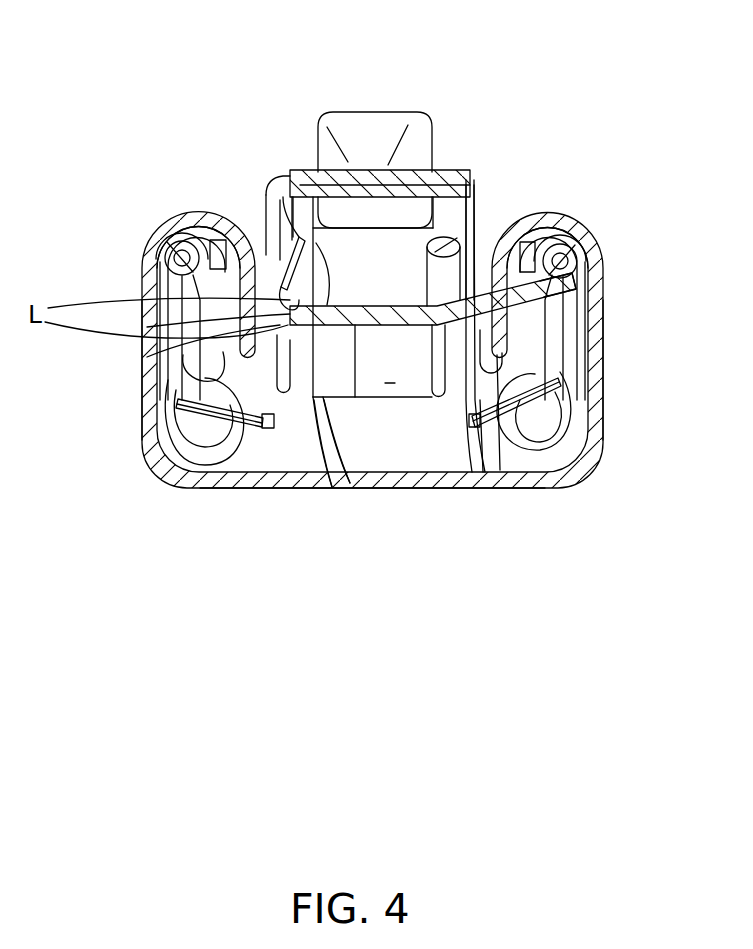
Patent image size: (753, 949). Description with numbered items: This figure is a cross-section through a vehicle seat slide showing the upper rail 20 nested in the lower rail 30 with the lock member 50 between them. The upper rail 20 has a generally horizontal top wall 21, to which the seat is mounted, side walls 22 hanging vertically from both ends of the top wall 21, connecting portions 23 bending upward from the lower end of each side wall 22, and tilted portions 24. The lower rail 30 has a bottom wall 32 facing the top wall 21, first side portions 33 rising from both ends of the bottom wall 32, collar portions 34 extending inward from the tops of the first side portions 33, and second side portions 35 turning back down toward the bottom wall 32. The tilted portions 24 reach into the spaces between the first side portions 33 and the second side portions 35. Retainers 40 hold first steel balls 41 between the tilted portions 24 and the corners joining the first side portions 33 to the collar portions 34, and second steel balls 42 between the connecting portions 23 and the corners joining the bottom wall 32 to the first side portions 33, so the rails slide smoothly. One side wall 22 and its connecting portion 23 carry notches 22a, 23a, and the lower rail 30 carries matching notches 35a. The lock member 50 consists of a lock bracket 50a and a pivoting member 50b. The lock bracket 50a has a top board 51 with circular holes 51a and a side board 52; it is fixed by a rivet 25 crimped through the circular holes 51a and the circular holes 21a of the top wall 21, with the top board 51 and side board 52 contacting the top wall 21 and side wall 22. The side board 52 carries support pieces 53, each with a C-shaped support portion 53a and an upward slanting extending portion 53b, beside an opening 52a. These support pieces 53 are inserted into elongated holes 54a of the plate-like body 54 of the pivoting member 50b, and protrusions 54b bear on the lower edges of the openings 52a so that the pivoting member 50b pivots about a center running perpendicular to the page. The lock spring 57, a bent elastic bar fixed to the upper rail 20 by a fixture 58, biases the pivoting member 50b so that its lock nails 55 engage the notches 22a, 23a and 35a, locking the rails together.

The upper rail 20 is at (305, 82).
The top wall 21 is at (440, 170).
The circular holes 21a is at (323, 128).
The side walls 22 is at (217, 222).
The notches 22a is at (483, 472).
The connecting portions 23 is at (185, 400).
The notches 23a is at (575, 285).
The tilted portions 24 is at (175, 215).
The rivet 25 is at (373, 115).
The lower rail 30 is at (582, 502).
The bottom wall 32 is at (222, 487).
The first side portions 33 is at (150, 418).
The collar portions 34 is at (196, 226).
The second side portions 35 is at (165, 250).
The notches 35a is at (500, 470).
The retainers 40 is at (170, 285).
The first steel balls 41 is at (182, 247).
The second steel balls 42 is at (190, 440).
The lock member 50 is at (543, 100).
The lock bracket 50a is at (456, 180).
The pivoting member 50b is at (472, 180).
The top board 51 is at (320, 178).
The circular holes 51a is at (413, 128).
The side board 52 is at (280, 175).
The opening 52a is at (268, 215).
The support pieces 53 is at (277, 510).
The support portion 53a is at (332, 487).
The extending portion 53b is at (350, 483).
The plate-like body 54 is at (355, 397).
The elongated holes 54a is at (147, 357).
The protrusions 54b is at (147, 327).
The lock nails 55 is at (575, 280).
The lock spring 57 is at (445, 397).
The fixture 58 is at (390, 383).